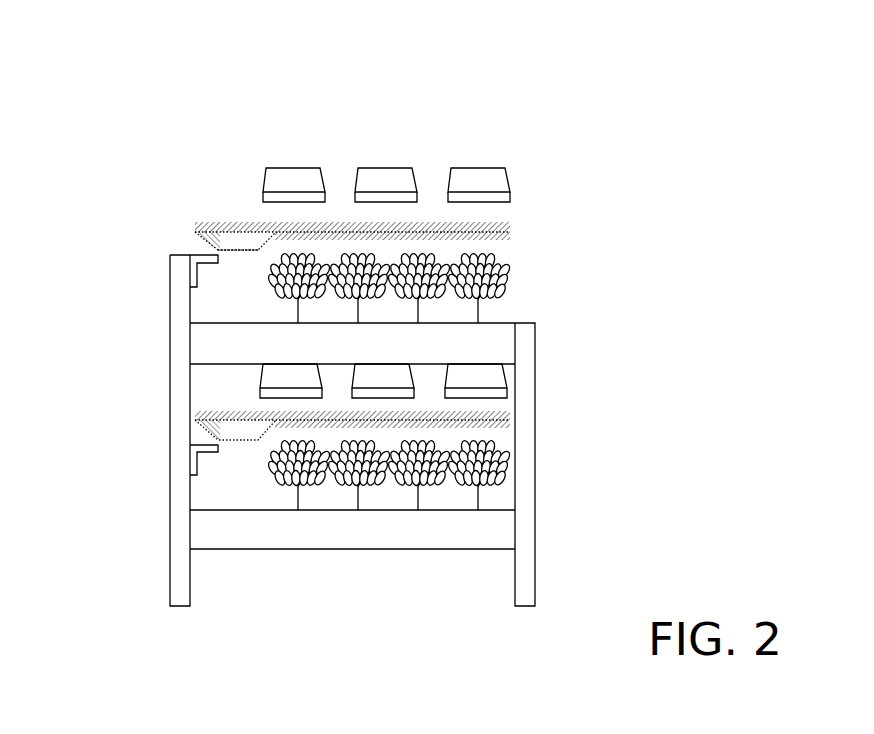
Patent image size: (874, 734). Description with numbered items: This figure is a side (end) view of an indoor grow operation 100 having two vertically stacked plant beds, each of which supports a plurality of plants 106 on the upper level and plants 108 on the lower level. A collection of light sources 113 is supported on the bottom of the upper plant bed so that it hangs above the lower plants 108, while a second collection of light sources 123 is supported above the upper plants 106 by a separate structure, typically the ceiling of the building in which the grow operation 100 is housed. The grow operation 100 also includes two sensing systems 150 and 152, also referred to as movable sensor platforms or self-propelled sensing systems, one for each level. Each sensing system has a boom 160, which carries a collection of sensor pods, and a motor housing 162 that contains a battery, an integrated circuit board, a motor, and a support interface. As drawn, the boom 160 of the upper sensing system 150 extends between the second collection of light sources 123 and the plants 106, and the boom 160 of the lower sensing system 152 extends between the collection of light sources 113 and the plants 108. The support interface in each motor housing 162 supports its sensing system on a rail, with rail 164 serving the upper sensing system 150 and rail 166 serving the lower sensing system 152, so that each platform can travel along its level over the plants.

The grow operation 100 is at (716, 123).
The plants 106 is at (516, 283).
The plants 108 is at (514, 468).
The collection of light sources 113 is at (510, 382).
The second collection of light sources 123 is at (534, 182).
The sensing system 150 is at (190, 226).
The sensing system 152 is at (190, 414).
The boom 160 is at (505, 223).
The motor housing 162 is at (224, 237).
The rail 164 is at (215, 250).
The rail 166 is at (213, 439).